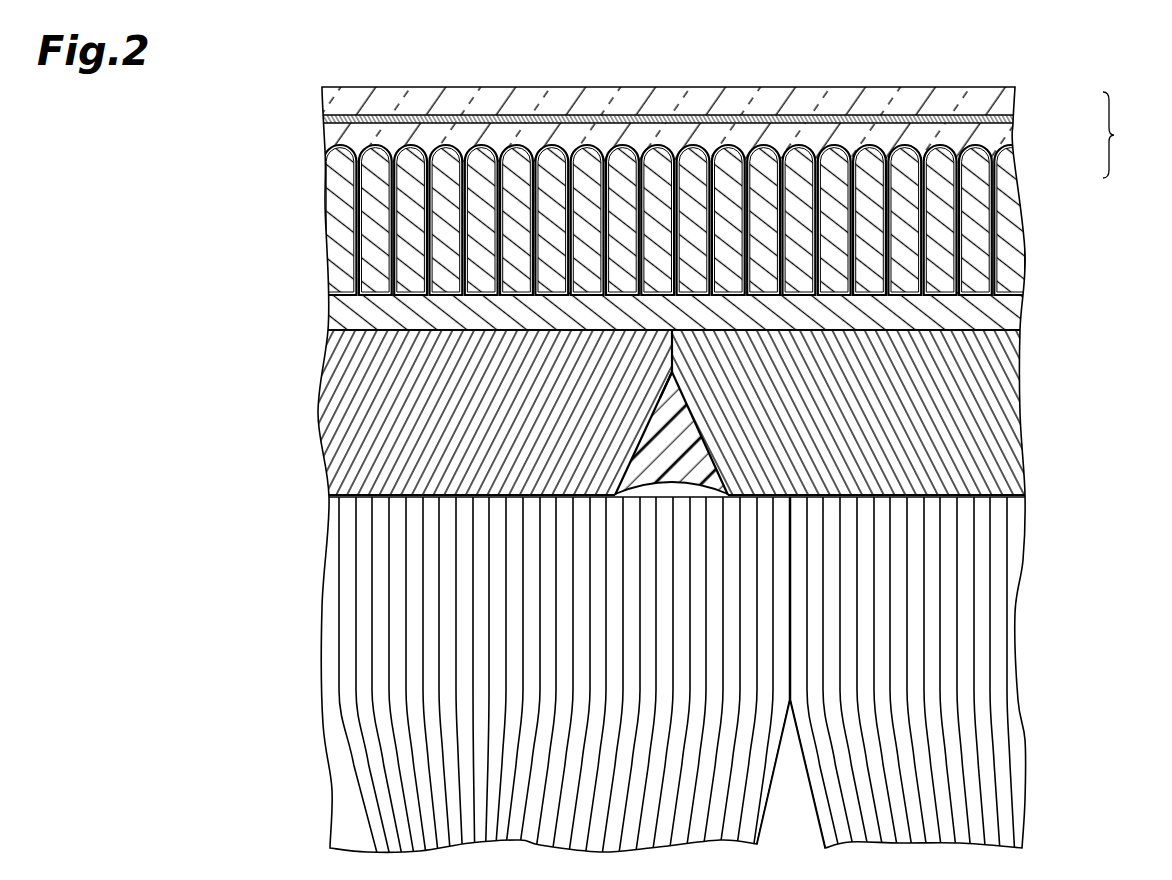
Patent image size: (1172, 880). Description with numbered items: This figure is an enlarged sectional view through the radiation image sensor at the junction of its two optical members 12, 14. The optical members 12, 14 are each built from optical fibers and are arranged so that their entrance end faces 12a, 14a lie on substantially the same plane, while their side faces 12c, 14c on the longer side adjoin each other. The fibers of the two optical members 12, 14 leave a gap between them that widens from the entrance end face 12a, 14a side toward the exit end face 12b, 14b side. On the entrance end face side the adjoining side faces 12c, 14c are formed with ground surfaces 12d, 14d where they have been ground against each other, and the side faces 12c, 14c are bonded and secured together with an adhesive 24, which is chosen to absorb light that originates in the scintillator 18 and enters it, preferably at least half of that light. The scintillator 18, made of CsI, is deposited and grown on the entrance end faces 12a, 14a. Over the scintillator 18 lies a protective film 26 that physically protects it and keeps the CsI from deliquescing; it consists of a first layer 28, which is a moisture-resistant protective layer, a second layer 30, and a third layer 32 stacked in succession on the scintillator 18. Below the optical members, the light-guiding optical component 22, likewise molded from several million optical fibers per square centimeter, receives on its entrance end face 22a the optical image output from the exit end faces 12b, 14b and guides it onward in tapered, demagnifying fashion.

The optical member 12 is at (345, 388).
The entrance end face 12a is at (348, 322).
The exit end face 12b is at (345, 501).
The side face 12c is at (640, 452).
The ground surface 12d is at (706, 452).
The optical member 14 is at (1005, 388).
The entrance end face 14a is at (998, 320).
The exit end face 14b is at (1001, 497).
The side face 14c is at (700, 430).
The ground surface 14d is at (683, 357).
The scintillator 18 is at (1018, 255).
The light-guiding optical component 22 is at (1000, 633).
The entrance end face 22a is at (990, 491).
The adhesive 24 is at (663, 430).
The protective film 26 is at (1128, 135).
The first layer 28 is at (1010, 140).
The second layer 30 is at (1010, 122).
The third layer 32 is at (1003, 100).